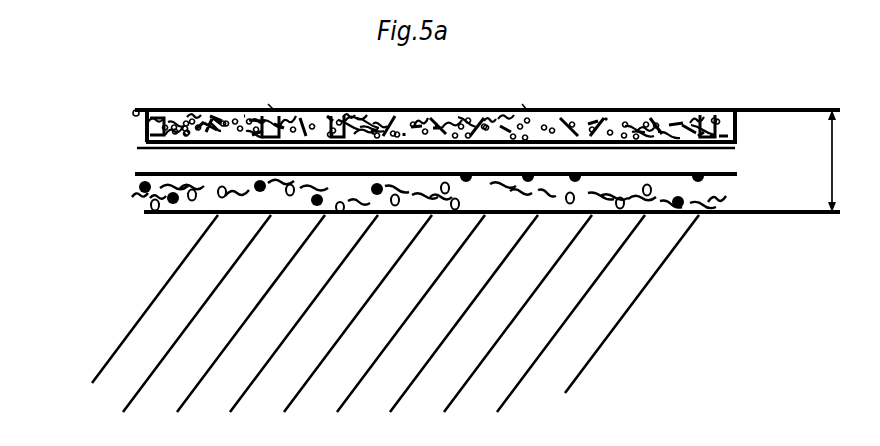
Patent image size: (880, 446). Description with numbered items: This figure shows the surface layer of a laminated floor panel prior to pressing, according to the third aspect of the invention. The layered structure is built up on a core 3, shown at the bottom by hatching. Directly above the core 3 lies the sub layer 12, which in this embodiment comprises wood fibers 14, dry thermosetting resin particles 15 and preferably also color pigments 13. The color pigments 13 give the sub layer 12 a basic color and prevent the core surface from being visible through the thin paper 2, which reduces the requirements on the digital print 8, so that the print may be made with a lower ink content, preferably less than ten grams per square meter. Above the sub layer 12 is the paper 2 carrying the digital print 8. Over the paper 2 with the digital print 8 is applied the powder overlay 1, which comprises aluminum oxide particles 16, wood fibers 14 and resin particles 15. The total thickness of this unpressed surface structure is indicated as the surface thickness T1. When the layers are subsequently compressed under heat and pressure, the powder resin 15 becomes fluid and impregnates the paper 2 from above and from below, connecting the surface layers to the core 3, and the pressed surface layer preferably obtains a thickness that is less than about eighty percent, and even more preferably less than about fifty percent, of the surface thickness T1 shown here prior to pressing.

The powder overlay 1 is at (740, 122).
The paper 2 is at (743, 165).
The core 3 is at (613, 325).
The digital print 8 is at (738, 150).
The sub layer 12 is at (725, 200).
The color pigments 13 is at (143, 186).
The wood fibers 14 is at (146, 125).
The resin particles 15 is at (136, 112).
The aluminum oxide particles 16 is at (142, 132).
The surface thickness prior to pressing T1 is at (846, 161).